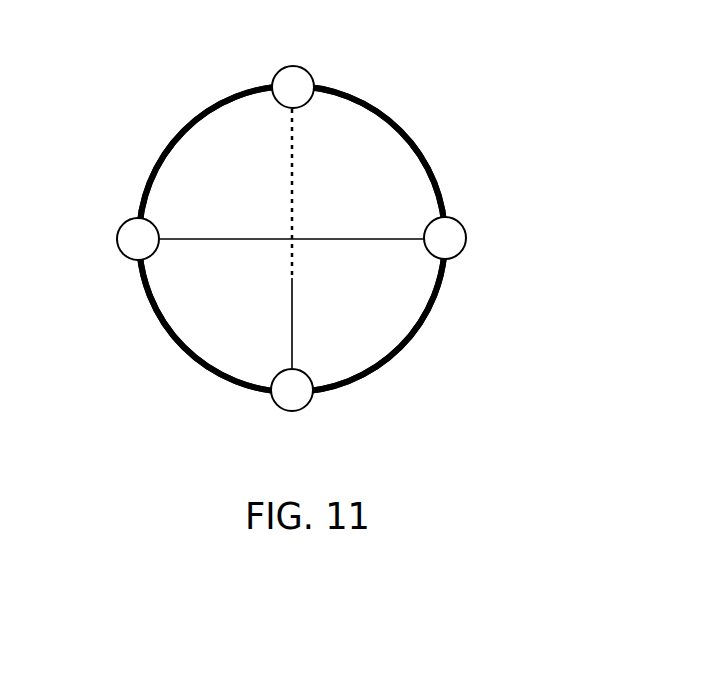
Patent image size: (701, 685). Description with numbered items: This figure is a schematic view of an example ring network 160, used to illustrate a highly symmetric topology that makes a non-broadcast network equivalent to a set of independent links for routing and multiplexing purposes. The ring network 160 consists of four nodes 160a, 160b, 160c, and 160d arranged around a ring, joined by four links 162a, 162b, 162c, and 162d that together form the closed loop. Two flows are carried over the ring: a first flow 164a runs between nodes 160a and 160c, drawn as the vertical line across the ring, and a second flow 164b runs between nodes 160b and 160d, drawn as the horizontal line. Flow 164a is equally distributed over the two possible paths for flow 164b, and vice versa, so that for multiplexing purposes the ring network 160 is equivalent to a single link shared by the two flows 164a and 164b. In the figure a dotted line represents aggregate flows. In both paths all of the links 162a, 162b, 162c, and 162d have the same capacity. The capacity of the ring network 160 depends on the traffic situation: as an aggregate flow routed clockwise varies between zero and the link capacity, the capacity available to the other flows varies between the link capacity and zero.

The ring network 160 is at (445, 338).
The node 160a is at (313, 72).
The node 160b is at (468, 235).
The node 160c is at (307, 412).
The node 160d is at (118, 252).
The link 162a is at (415, 138).
The link 162b is at (432, 303).
The link 162c is at (188, 358).
The link 162d is at (178, 122).
The flow 164a is at (293, 185).
The flow 164b is at (200, 240).